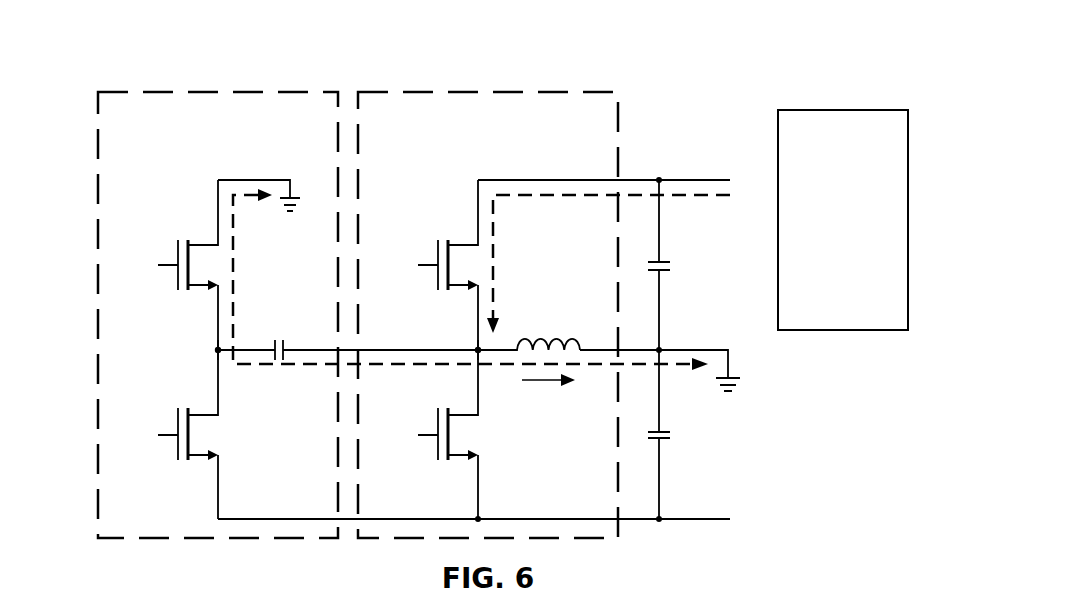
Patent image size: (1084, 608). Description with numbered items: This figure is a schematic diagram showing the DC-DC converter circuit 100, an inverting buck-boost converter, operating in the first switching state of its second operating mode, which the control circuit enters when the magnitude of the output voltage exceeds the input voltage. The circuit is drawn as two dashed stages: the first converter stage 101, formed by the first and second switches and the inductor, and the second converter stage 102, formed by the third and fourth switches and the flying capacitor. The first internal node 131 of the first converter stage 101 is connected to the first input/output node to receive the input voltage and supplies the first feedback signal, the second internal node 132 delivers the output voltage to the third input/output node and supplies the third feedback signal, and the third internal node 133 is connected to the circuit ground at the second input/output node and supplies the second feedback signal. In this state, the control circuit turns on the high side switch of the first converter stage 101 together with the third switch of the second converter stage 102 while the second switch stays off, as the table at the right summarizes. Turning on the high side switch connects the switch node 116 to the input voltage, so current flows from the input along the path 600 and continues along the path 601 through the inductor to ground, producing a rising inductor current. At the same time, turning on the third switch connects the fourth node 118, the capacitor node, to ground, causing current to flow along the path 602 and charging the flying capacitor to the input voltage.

The DC-DC converter circuit 100 is at (686, 55).
The first converter stage 101 is at (517, 85).
The second converter stage 102 is at (190, 85).
The switch node 116 is at (478, 380).
The fourth node 118 is at (218, 377).
The first internal node 131 is at (478, 210).
The second internal node 132 is at (478, 473).
The third internal node 133 is at (218, 210).
The path 600 is at (573, 195).
The path 601 is at (590, 367).
The path 602 is at (293, 367).